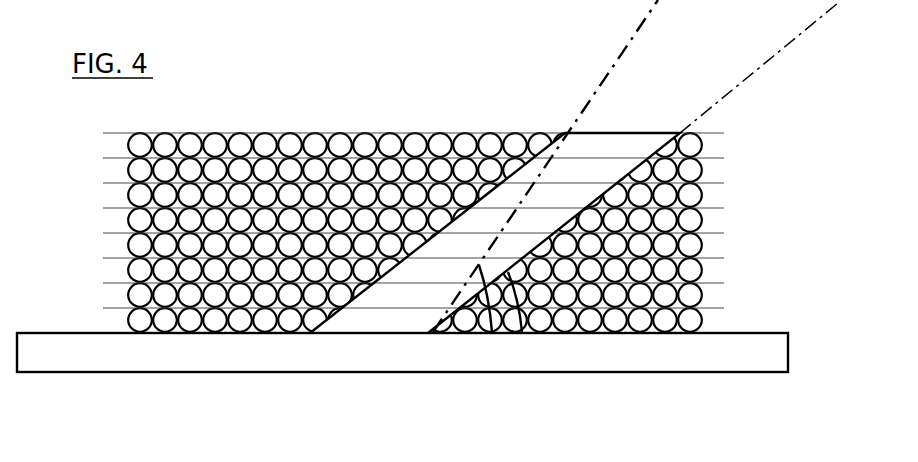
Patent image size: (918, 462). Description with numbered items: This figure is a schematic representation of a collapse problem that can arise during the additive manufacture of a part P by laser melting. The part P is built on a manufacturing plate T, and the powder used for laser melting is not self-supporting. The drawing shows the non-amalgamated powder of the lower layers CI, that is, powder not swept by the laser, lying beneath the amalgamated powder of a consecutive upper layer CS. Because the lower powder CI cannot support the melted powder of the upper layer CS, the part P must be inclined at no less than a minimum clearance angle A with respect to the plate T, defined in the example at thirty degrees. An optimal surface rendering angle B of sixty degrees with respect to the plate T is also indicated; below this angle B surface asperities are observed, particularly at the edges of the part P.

The non-amalgamated powder of lower layers CI is at (723, 184).
The amalgamated powder of a consecutive upper layer CS is at (725, 170).
The part P is at (635, 118).
The minimum clearance angle A is at (521, 317).
The optimal surface rendering angle B is at (483, 313).
The manufacturing plate T is at (402, 352).